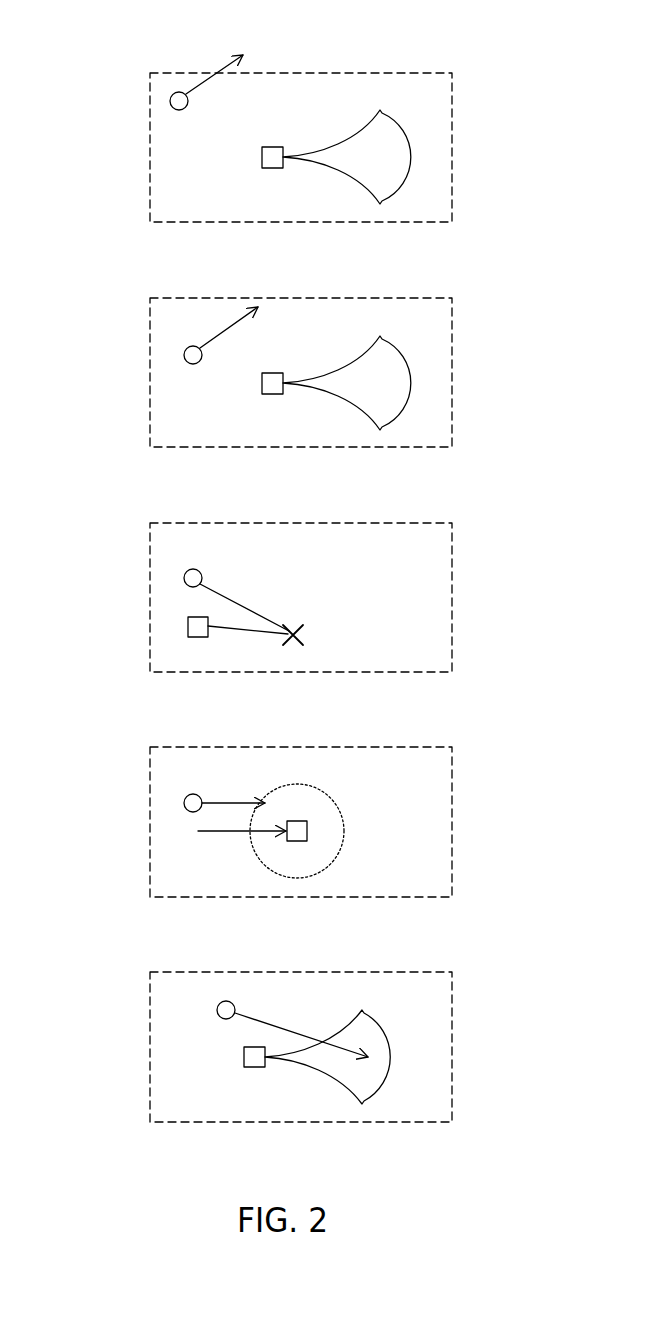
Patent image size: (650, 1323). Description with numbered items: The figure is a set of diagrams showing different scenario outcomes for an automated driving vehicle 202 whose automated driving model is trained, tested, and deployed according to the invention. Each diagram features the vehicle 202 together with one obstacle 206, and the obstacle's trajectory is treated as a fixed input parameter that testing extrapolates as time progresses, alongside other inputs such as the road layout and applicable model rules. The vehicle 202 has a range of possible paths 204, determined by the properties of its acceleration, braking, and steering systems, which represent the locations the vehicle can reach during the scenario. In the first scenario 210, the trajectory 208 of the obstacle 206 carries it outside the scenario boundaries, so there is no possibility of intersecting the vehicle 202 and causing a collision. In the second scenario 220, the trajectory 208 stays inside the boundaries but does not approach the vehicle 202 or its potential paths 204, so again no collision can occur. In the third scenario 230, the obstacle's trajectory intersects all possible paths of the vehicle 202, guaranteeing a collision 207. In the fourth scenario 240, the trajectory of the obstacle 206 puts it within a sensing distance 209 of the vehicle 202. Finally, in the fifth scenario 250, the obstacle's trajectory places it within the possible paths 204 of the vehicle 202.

The automated driving vehicle 202 is at (273, 168).
The range of possible paths 204 is at (412, 155).
The obstacle 206 is at (170, 103).
The collision 207 is at (303, 647).
The trajectory 208 is at (235, 58).
The sensing distance 209 is at (338, 852).
The first scenario 210 is at (151, 186).
The second scenario 220 is at (151, 410).
The third scenario 230 is at (151, 637).
The fourth scenario 240 is at (151, 862).
The fifth scenario 250 is at (151, 1085).